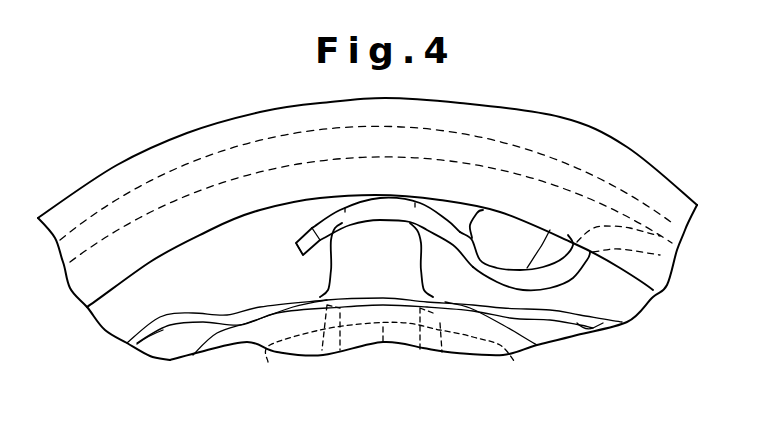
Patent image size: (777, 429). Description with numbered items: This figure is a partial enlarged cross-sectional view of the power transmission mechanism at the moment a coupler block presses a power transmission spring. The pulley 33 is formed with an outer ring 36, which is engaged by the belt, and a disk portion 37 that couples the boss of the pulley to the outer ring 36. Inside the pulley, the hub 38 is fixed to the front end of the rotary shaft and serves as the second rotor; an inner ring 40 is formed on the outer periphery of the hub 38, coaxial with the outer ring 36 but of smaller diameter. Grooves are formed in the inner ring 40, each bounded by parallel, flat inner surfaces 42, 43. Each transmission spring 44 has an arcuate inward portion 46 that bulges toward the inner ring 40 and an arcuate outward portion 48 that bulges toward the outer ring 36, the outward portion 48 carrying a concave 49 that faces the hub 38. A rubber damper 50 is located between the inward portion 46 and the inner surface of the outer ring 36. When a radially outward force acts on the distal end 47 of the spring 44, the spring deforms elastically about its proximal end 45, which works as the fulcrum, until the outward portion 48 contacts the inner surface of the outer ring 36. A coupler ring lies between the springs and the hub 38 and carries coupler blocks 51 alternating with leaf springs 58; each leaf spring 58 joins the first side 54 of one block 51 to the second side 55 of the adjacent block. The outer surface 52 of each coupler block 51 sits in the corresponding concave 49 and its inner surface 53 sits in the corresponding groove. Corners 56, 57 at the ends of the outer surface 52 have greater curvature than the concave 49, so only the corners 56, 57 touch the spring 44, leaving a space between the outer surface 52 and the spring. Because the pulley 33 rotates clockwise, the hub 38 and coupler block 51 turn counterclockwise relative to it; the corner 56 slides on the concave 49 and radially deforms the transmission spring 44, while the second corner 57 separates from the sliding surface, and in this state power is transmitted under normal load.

The pulley 33 is at (117, 165).
The outer ring 36 is at (185, 145).
The disk portion 37 is at (107, 315).
The hub 38 is at (537, 345).
The inner ring 40 is at (402, 357).
The inner surface 42 is at (341, 345).
The inner surface 43 is at (423, 348).
The transmission spring 44 is at (297, 236).
The proximal end 45 is at (583, 260).
The inward portion 46 is at (516, 234).
The distal end 47 is at (300, 249).
The outward portion 48 is at (403, 198).
The concave 49 is at (320, 247).
The rubber damper 50 is at (513, 228).
The coupler block 51 is at (421, 268).
The outer surface 52 is at (377, 221).
The inner surface 53 is at (385, 346).
The first side 54 is at (323, 352).
The second side 55 is at (453, 352).
The corner 56 is at (330, 233).
The second corner 57 is at (438, 228).
The leaf spring 58 is at (135, 345).